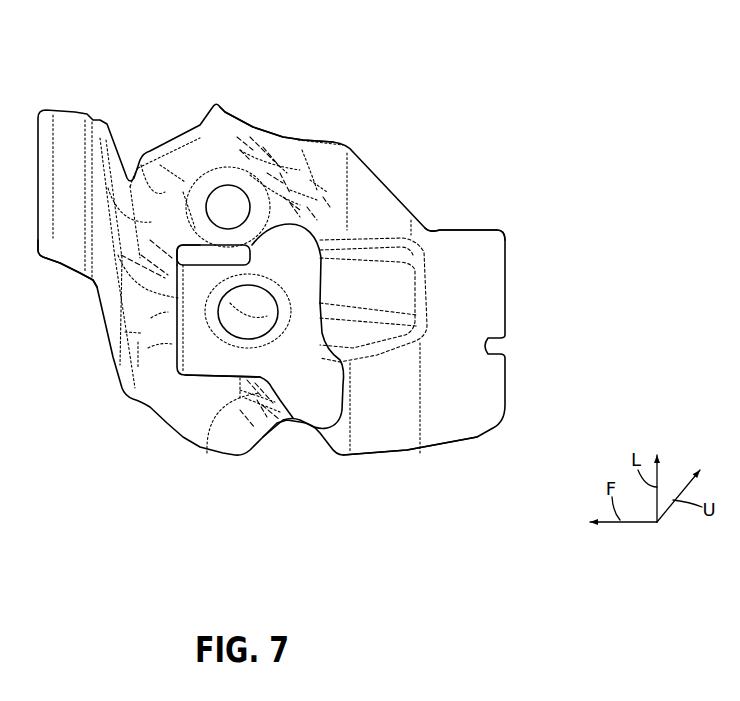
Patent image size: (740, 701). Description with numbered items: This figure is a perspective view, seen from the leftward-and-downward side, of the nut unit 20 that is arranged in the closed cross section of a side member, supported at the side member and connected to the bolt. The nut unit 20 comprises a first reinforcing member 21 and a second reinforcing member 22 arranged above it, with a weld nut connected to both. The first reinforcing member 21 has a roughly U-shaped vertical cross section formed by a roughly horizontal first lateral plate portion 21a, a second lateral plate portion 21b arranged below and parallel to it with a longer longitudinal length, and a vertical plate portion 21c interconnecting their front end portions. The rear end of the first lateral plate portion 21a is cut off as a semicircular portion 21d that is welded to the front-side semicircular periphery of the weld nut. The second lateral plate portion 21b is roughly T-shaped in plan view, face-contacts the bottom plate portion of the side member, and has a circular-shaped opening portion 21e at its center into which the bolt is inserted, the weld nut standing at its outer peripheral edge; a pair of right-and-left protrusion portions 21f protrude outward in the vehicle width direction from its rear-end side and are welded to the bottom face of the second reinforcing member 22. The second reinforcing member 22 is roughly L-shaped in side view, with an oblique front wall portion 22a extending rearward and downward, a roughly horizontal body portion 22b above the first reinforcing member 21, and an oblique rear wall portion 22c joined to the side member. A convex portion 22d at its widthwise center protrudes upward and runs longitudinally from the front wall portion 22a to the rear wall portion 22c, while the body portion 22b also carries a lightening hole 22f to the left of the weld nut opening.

The nut unit 20 is at (110, 82).
The first reinforcing member 21 is at (172, 363).
The first lateral plate portion 21a is at (200, 245).
The second lateral plate portion 21b is at (232, 325).
The vertical plate portion 21c is at (177, 252).
The semicircular portion 21d is at (248, 243).
The circular-shaped opening portion 21e is at (229, 378).
The protrusion portions 21f is at (297, 247).
The second reinforcing member 22 is at (410, 197).
The front wall portion 22a is at (93, 278).
The body portion 22b is at (263, 117).
The rear wall portion 22c is at (427, 227).
The convex portion 22d is at (372, 335).
The lightening hole 22f is at (227, 188).